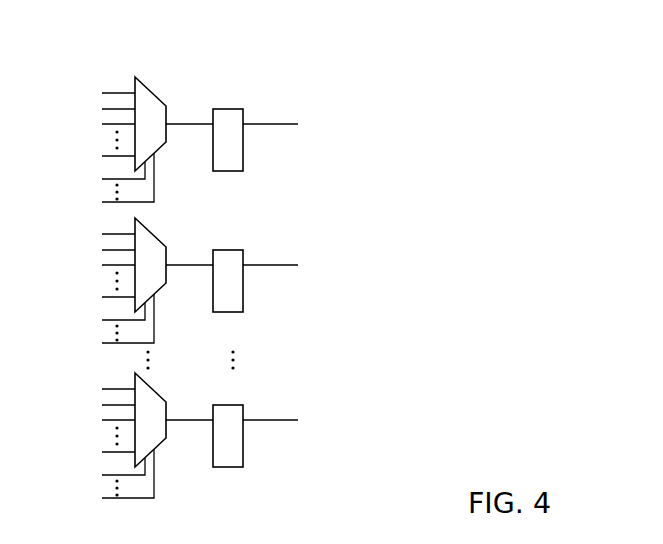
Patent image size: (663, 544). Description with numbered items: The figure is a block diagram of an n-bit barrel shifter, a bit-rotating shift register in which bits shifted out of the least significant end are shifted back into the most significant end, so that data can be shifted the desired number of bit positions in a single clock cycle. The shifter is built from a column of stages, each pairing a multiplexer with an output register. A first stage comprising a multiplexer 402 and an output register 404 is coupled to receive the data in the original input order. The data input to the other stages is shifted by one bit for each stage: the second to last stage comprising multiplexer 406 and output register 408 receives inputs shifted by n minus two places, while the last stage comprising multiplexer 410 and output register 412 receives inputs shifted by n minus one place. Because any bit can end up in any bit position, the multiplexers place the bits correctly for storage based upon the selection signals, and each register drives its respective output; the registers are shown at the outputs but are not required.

The multiplexer 410 is at (162, 103).
The output register 412 is at (230, 109).
The multiplexer 406 is at (152, 233).
The output register 408 is at (230, 250).
The multiplexer 402 is at (150, 388).
The output register 404 is at (230, 405).